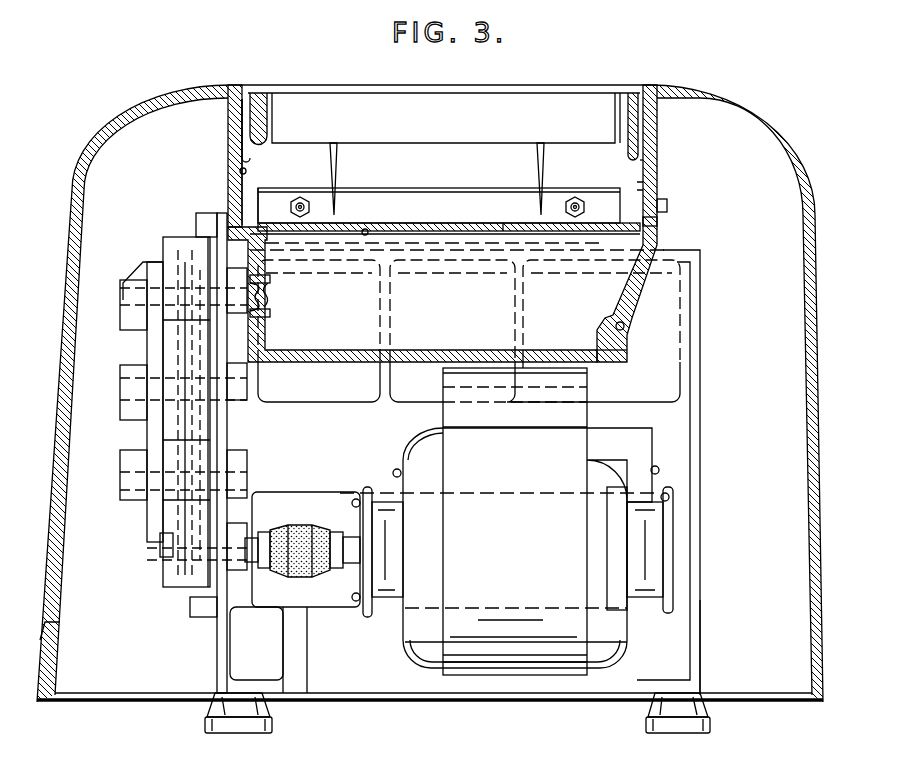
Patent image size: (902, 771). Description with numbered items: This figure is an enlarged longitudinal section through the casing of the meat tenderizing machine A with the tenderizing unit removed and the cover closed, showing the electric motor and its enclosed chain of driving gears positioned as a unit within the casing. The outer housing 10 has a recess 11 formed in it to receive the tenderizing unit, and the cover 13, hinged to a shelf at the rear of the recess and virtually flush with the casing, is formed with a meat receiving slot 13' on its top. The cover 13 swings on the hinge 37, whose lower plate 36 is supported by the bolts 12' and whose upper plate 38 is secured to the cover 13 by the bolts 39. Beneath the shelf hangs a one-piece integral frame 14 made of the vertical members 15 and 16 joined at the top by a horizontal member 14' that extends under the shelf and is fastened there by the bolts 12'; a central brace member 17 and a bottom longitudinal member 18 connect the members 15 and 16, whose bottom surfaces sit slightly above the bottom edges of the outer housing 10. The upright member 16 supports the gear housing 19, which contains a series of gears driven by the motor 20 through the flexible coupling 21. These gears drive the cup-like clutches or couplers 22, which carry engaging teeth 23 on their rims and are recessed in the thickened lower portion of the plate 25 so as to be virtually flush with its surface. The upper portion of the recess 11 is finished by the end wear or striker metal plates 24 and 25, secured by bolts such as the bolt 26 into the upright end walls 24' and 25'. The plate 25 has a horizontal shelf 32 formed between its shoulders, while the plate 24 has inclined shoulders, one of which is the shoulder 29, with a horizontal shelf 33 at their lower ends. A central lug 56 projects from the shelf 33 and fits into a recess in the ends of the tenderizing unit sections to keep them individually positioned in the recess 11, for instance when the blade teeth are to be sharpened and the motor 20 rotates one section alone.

The outer housing 10 is at (818, 433).
The meat tenderizing machine A is at (790, 490).
The recess 11 is at (630, 168).
The bolts 12' is at (433, 167).
The cover portion 13 is at (446, 97).
The meat receiving slot 13' is at (444, 61).
The one-piece integral frame 14 is at (707, 472).
The horizontal member 14' is at (490, 223).
The vertical member 15 is at (700, 660).
The vertical member 16 is at (218, 634).
The central brace member 17 is at (302, 412).
The bottom longitudinal member 18 is at (378, 680).
The gear housing 19 is at (130, 440).
The motor 20 is at (552, 655).
The flexible coupling 21 is at (300, 525).
The clutches or couplers 22 is at (268, 292).
The engaging teeth 23 is at (270, 278).
The end wear or striker metal plate 24 is at (689, 168).
The upright end wall 24' is at (693, 212).
The end wear or striker metal plate 25 is at (210, 156).
The upright end wall 25' is at (207, 162).
The bolt 26 is at (668, 206).
The inclined shoulder 29 is at (600, 282).
The horizontal shelf 32 is at (250, 228).
The horizontal shelf 33 is at (600, 320).
The lower plate 36 is at (365, 228).
The hinge 37 is at (503, 225).
The upper plate 38 is at (428, 196).
The bolts 39 is at (302, 198).
The central lug 56 is at (625, 325).